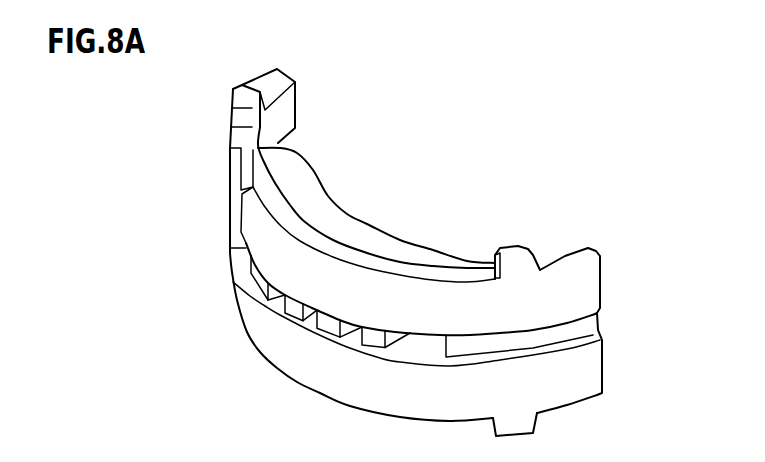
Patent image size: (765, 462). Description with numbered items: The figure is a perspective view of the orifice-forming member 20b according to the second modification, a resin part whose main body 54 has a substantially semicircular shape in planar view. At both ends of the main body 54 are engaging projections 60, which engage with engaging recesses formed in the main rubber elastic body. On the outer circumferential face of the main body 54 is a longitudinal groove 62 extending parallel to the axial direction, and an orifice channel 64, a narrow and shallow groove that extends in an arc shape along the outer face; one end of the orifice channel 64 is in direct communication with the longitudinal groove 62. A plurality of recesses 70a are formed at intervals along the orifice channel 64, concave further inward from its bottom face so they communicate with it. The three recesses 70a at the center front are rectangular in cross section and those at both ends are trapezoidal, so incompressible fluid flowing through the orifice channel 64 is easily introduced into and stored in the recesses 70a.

The orifice-forming member 20b is at (458, 171).
The main body 54 is at (349, 258).
The engaging projection 60 is at (288, 110).
The longitudinal groove 62 is at (233, 172).
The orifice channel 64 is at (250, 271).
The recess 70a is at (279, 294).